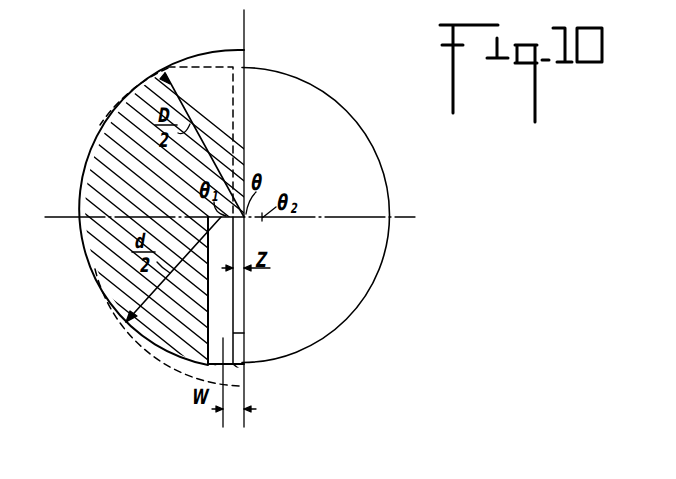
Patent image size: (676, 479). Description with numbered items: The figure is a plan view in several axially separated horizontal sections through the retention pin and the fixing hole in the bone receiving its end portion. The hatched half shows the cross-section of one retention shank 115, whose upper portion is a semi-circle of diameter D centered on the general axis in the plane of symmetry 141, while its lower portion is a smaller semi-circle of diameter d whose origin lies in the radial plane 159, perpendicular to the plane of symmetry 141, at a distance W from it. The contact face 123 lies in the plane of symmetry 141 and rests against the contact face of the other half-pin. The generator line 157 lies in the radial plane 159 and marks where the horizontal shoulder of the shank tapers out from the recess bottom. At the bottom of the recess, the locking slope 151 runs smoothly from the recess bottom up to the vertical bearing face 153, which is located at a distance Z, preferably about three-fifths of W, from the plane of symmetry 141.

The retention shank 115 is at (203, 72).
The contact face 123 is at (267, 73).
The generator line 157 is at (80, 212).
The radial plane 159 is at (421, 217).
The locking slope 151 is at (207, 313).
The bearing face 153 is at (258, 325).
The plane of symmetry 141 is at (256, 412).